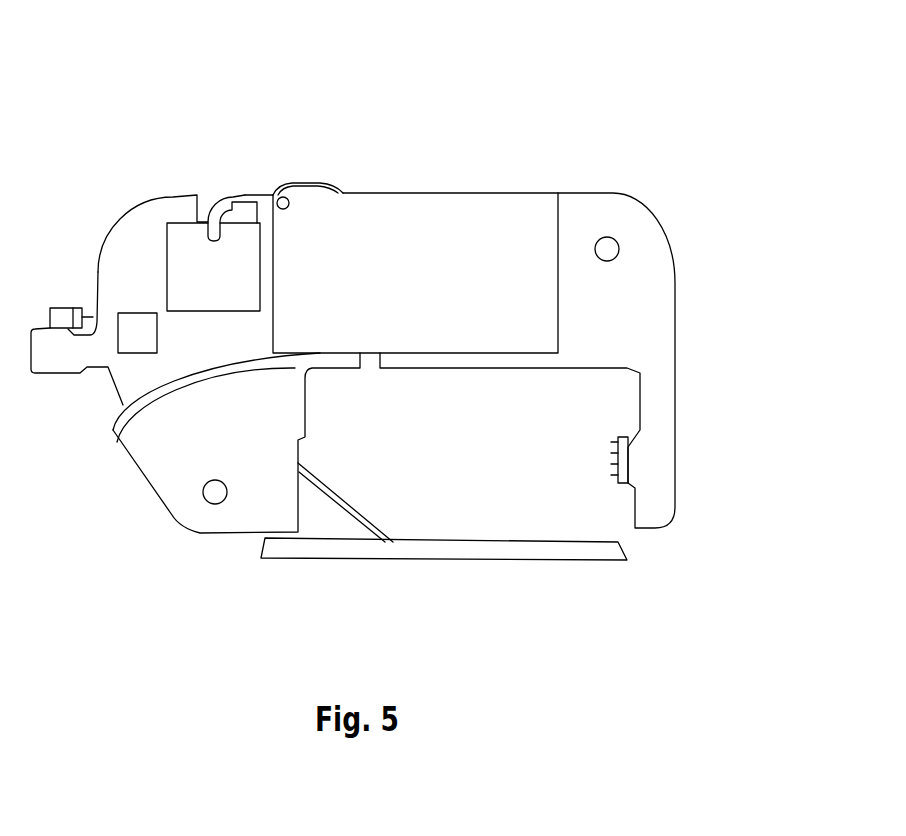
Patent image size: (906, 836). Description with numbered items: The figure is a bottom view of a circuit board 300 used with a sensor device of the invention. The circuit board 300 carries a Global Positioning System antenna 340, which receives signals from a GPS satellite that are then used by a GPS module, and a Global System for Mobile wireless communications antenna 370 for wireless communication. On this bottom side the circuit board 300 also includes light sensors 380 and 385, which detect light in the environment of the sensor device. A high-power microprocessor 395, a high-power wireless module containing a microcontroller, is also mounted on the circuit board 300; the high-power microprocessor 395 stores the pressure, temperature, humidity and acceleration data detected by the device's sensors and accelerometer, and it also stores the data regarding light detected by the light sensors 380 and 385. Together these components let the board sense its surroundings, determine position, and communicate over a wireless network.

The circuit board 300 is at (768, 34).
The Global Positioning System (GPS) antenna 340 is at (183, 242).
The Global System for Mobile (GSM) wireless communications antenna 370 is at (518, 560).
The light sensor 380 is at (120, 317).
The light sensor 385 is at (599, 241).
The high-power microprocessor 395 is at (398, 192).